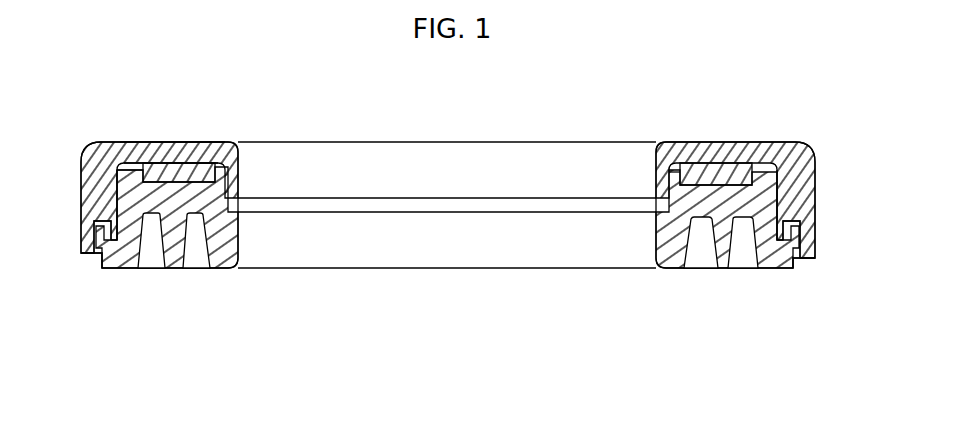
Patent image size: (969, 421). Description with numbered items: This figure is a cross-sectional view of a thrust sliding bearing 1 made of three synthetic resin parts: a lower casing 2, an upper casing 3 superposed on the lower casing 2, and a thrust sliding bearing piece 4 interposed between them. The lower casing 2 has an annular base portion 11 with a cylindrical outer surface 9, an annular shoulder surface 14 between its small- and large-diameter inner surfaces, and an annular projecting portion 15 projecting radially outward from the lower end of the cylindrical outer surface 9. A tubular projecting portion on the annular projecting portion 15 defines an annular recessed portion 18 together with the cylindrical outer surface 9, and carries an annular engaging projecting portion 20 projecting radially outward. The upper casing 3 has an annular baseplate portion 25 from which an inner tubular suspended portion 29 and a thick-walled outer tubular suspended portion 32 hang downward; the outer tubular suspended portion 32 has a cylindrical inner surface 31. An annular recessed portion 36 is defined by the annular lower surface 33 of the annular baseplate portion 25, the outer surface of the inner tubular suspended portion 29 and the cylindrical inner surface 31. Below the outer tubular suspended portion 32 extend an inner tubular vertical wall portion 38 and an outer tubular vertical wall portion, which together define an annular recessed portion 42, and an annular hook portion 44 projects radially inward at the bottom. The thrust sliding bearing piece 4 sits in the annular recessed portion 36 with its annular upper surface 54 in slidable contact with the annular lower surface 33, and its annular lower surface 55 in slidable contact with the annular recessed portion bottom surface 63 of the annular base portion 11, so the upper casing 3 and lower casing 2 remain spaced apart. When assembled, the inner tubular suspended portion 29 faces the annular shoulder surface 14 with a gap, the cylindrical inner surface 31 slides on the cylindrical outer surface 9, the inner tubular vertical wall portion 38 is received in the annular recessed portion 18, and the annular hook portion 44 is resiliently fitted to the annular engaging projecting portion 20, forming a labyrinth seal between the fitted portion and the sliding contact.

The thrust sliding bearing 1 is at (806, 275).
The lower casing 2 is at (540, 269).
The upper casing 3 is at (355, 141).
The thrust sliding bearing piece 4 is at (731, 172).
The cylindrical outer surface 9 is at (112, 188).
The annular base portion 11 is at (176, 233).
The annular shoulder surface 14 is at (452, 212).
The annular projecting portion 15 is at (778, 265).
The annular recessed portion 18 is at (108, 238).
The annular engaging projecting portion 20 is at (97, 238).
The annular baseplate portion 25 is at (190, 148).
The inner tubular suspended portion 29 is at (660, 178).
The cylindrical inner surface 31 is at (772, 182).
The outer tubular suspended portion 32 is at (87, 208).
The annular lower surface 33 is at (203, 167).
The annular recessed portion 36 is at (132, 165).
The inner tubular vertical wall portion 38 is at (752, 248).
The annular recessed portion 42 is at (797, 229).
The annular hook portion 44 is at (93, 248).
The annular upper surface 54 is at (155, 162).
The annular lower surface 55 is at (683, 236).
The annular recessed portion bottom surface 63 is at (703, 185).